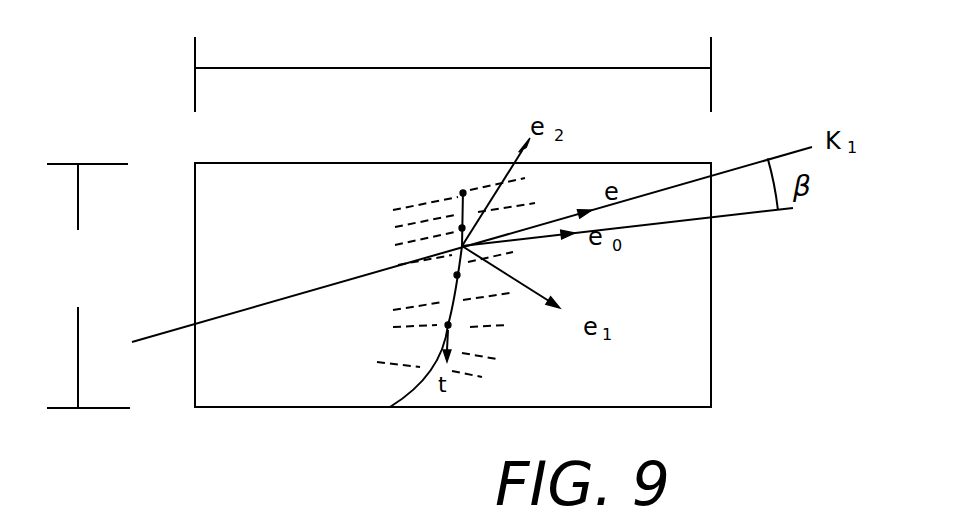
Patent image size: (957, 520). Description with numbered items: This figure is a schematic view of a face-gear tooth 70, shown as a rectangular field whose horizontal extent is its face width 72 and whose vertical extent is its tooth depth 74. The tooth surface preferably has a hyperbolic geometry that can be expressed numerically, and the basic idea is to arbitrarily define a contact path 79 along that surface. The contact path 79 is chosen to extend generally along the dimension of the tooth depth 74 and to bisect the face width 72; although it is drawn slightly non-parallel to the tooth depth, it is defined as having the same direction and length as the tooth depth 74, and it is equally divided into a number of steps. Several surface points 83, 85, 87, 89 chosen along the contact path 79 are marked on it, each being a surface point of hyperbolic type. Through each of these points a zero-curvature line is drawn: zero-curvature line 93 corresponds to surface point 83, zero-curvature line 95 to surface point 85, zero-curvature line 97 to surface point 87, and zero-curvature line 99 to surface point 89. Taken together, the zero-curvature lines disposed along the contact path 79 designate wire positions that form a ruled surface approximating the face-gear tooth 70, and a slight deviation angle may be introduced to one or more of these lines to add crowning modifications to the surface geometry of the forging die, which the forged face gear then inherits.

The face-gear tooth 70 is at (260, 163).
The face width 72 is at (265, 66).
The tooth depth 74 is at (80, 193).
The contact path 79 is at (448, 325).
The surface point 83 is at (457, 275).
The surface point 85 is at (462, 228).
The surface point 87 is at (463, 193).
The surface point 89 is at (448, 325).
The zero-curvature line 93 is at (404, 292).
The zero-curvature line 95 is at (493, 218).
The zero-curvature line 97 is at (480, 190).
The zero-curvature line 99 is at (395, 333).